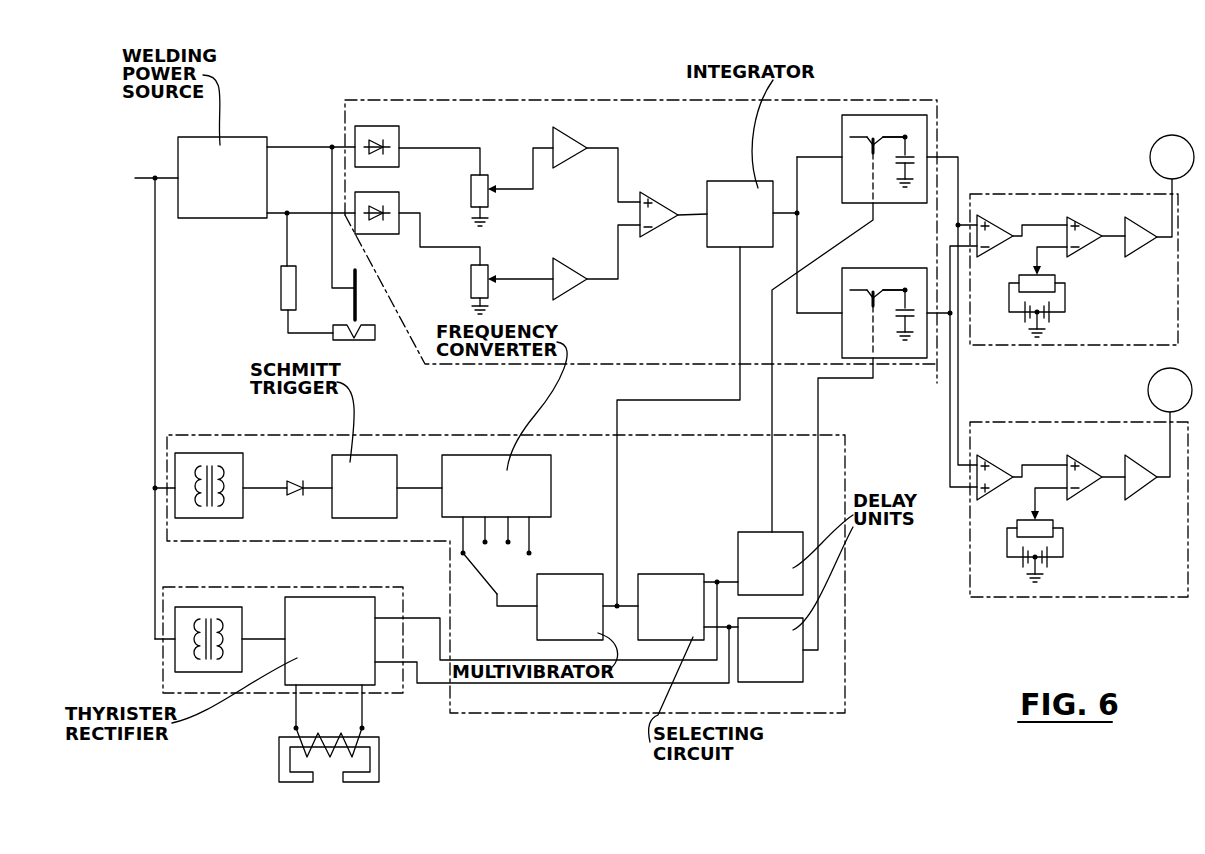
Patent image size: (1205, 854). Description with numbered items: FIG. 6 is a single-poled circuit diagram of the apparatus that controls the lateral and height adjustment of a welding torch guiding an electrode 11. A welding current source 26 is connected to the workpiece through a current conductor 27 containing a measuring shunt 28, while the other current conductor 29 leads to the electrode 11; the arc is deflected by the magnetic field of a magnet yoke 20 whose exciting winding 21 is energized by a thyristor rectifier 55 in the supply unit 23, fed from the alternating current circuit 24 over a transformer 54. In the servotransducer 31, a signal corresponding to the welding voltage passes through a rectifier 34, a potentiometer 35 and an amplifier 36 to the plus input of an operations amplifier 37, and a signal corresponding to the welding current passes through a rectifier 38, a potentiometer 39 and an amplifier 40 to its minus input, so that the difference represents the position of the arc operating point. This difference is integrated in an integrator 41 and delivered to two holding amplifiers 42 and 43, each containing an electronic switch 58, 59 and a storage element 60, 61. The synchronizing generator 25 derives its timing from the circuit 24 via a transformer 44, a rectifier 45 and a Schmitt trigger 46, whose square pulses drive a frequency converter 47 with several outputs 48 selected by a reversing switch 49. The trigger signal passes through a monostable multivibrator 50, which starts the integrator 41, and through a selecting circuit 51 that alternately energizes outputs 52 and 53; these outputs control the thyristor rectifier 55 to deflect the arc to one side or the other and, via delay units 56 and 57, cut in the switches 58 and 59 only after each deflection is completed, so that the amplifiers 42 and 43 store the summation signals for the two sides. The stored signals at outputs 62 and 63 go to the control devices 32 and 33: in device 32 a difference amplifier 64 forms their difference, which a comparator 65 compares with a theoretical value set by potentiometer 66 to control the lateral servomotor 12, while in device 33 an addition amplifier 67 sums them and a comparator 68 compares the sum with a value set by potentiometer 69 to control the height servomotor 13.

The electrode 11 is at (353, 315).
The lateral servomotor 12 is at (1150, 145).
The height servomotor 13 is at (1148, 380).
The magnet yoke 20 is at (373, 765).
The exciting winding 21 is at (357, 745).
The supply unit 23 is at (253, 695).
The alternating current circuit 24 is at (155, 265).
The synchronizing generator 25 is at (642, 712).
The welding current source 26 is at (179, 148).
The current conductor 27 is at (287, 230).
The measuring shunt 28 is at (281, 290).
The output line 29 is at (293, 147).
The servotransducer 31 is at (520, 364).
The control device 32 is at (1042, 194).
The control device 33 is at (1050, 422).
The rectifier 34 is at (399, 137).
The potentiometer 35 is at (471, 200).
The amplifier 36 is at (575, 135).
The operations amplifier 37 is at (662, 200).
The rectifier 38 is at (378, 236).
The potentiometer 39 is at (468, 280).
The amplifier 40 is at (570, 290).
The integrator 41 is at (745, 181).
The holding amplifier 42 is at (842, 140).
The holding amplifier 43 is at (880, 268).
The transformer 44 is at (207, 453).
The rectifier 45 is at (292, 478).
The Schmitt trigger 46 is at (357, 452).
The frequency converter 47 is at (552, 490).
The outputs 48 is at (495, 542).
The reversing switch 49 is at (477, 575).
The monostable multivibrator 50 is at (565, 574).
The selecting circuit 51 is at (665, 574).
The output 52 is at (724, 580).
The output 53 is at (715, 630).
The transformer 54 is at (207, 607).
The thyristor rectifier 55 is at (333, 597).
The delay unit 56 is at (760, 528).
The delay unit 57 is at (803, 660).
The electronic switch 58 is at (870, 143).
The electronic switch 59 is at (867, 298).
The storage element 60 is at (907, 153).
The storage element 61 is at (897, 317).
The output 62 is at (950, 158).
The output 63 is at (945, 378).
The difference amplifier 64 is at (993, 218).
The comparator 65 is at (1082, 217).
The potentiometer 66 is at (1047, 292).
The comparator 67 is at (995, 462).
The comparator 68 is at (1082, 460).
The potentiometer 69 is at (1040, 530).